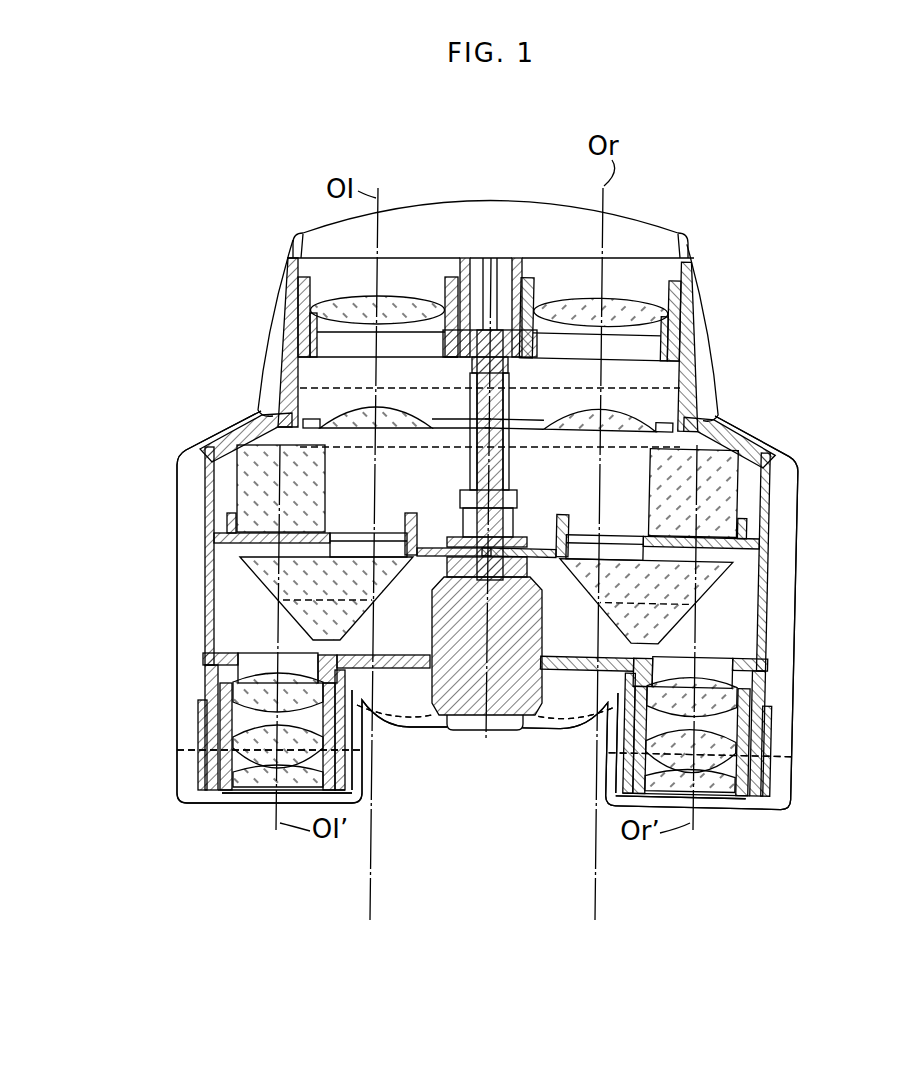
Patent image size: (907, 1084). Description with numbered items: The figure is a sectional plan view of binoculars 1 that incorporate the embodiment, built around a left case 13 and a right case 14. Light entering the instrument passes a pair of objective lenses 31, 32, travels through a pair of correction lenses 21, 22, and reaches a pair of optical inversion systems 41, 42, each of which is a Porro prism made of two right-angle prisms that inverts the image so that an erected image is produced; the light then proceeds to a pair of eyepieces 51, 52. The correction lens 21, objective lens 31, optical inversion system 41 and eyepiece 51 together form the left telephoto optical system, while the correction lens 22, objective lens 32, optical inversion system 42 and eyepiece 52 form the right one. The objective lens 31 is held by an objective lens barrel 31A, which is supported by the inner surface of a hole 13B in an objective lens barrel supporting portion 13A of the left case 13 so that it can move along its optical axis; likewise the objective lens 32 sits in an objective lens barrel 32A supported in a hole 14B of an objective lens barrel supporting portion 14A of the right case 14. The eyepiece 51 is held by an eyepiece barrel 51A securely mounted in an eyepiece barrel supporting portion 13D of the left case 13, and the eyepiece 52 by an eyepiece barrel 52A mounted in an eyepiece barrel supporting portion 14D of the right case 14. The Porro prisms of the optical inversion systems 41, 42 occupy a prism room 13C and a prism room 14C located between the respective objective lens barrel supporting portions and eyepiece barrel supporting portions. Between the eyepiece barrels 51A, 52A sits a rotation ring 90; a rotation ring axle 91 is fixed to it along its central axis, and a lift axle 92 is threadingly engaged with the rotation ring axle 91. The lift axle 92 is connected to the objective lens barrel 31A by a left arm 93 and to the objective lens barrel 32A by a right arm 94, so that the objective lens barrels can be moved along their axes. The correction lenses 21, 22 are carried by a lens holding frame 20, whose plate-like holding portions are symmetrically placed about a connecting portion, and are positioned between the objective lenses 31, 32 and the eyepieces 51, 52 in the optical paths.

The binoculars 1 is at (765, 231).
The left case 13 is at (186, 512).
The right case 14 is at (796, 515).
The objective lens barrel supporting portion 13A is at (283, 358).
The objective lens barrel supporting portion 14A is at (714, 364).
The hole 13B is at (296, 332).
The hole 14B is at (692, 333).
The prism room 13C is at (220, 472).
The prism room 14C is at (753, 480).
The eyepiece barrel supporting portion 13D is at (192, 728).
The eyepiece barrel supporting portion 14D is at (788, 728).
The lens holding frame 20 is at (655, 282).
The correction lens 21 is at (337, 410).
The correction lens 22 is at (646, 413).
The objective lens 31 is at (337, 280).
The objective lens 32 is at (674, 262).
The objective lens barrel 31A is at (298, 280).
The objective lens barrel 32A is at (690, 282).
The optical inversion system 41 is at (225, 565).
The optical inversion system 42 is at (758, 570).
The eyepiece 51 is at (273, 819).
The eyepiece 52 is at (707, 819).
The eyepiece barrel 51A is at (236, 782).
The eyepiece barrel 52A is at (738, 783).
The rotation ring 90 is at (457, 708).
The rotation ring axle 91 is at (500, 465).
The lift axle 92 is at (465, 300).
The left arm 93 is at (417, 306).
The right arm 94 is at (531, 390).